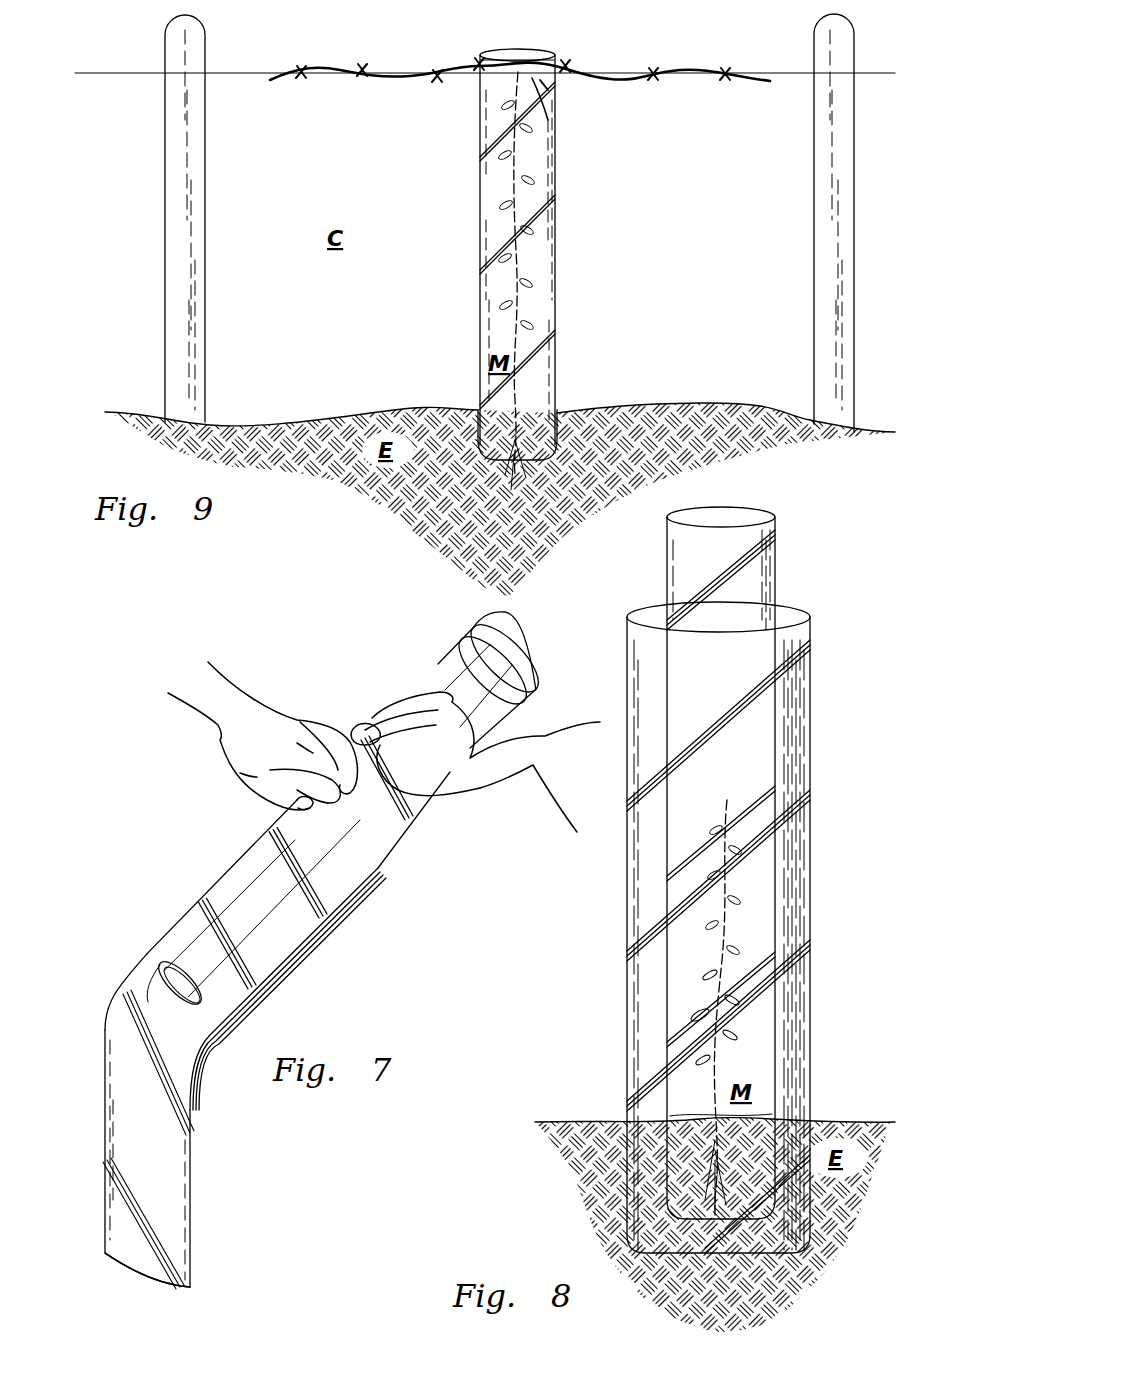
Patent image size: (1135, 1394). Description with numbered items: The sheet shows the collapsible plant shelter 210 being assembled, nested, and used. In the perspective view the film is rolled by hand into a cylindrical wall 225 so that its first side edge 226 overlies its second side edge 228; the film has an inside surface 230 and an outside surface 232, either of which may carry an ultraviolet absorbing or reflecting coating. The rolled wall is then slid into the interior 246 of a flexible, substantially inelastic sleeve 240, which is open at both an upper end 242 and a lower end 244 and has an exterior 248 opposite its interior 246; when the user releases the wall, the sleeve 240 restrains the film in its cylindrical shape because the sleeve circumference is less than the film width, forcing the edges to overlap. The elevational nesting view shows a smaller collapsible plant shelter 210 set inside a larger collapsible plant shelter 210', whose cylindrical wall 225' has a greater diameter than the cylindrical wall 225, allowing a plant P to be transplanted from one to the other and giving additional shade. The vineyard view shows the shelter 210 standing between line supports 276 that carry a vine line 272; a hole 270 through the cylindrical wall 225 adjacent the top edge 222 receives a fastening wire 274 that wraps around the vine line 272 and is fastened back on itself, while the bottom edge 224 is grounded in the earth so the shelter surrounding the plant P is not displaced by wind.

In FIG. 9, the collapsible plant shelter 210 is at (557, 247).
In FIG. 8, the collapsible plant shelter 210 is at (797, 842).
In FIG. 8, the larger collapsible plant shelter 210' is at (679, 927).
In FIG. 9, the top edge 222 is at (497, 55).
In FIG. 7, the top edge 222 is at (520, 650).
In FIG. 9, the bottom edge 224 is at (500, 460).
In FIG. 7, the bottom edge 224 is at (152, 990).
In FIG. 8, the cylindrical wall 225 is at (766, 788).
In FIG. 7, the cylindrical wall 225 is at (340, 862).
In FIG. 8, the cylindrical wall of larger shelter 225' is at (750, 946).
In FIG. 7, the first side edge 226 is at (430, 686).
In FIG. 7, the second side edge 228 is at (470, 652).
In FIG. 7, the inside surface 230 is at (187, 1000).
In FIG. 7, the outside surface 232 is at (385, 836).
In FIG. 7, the sleeve 240 is at (164, 940).
In FIG. 7, the upper end 242 is at (380, 858).
In FIG. 7, the lower end 244 is at (165, 1280).
In FIG. 7, the interior 246 is at (148, 1292).
In FIG. 7, the exterior 248 is at (143, 1223).
In FIG. 9, the hole 270 is at (545, 122).
In FIG. 9, the vine line 272 is at (800, 78).
In FIG. 9, the fastening wire 274 is at (552, 88).
In FIG. 9, the line supports 276 is at (198, 230).
In FIG. 9, the plant P is at (505, 345).
In FIG. 8, the plant P is at (712, 1085).